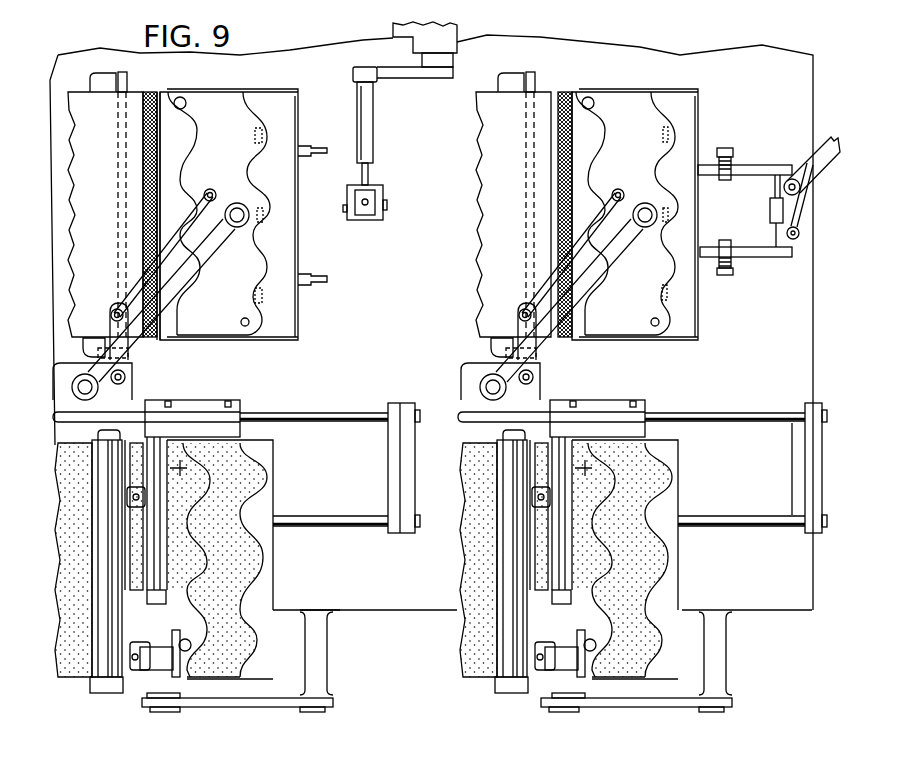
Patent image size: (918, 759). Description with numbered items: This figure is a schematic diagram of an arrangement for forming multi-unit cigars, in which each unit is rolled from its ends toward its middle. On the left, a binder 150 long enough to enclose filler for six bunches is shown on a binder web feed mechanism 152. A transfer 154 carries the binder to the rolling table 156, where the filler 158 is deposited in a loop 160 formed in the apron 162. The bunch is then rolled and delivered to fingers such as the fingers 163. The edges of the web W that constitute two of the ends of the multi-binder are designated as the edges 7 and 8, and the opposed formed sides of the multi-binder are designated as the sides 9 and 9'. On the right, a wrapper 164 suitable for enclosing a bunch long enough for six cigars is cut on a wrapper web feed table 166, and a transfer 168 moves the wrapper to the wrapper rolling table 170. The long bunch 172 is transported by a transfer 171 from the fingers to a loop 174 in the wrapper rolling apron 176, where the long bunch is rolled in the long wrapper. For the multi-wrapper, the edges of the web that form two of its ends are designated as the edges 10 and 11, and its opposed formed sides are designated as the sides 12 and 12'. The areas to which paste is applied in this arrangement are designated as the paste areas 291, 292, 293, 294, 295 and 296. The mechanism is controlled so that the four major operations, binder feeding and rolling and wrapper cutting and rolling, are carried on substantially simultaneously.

The apron 162 is at (73, 92).
The loop 160 is at (147, 97).
The filler 158 is at (154, 141).
The paste area 291 is at (253, 134).
The paste area 292 is at (270, 206).
The paste area 293 is at (253, 292).
The transfer 154 is at (133, 348).
The rolling table 156 is at (271, 356).
The fingers 163 is at (308, 281).
The transfer 171 is at (389, 159).
The web edge 7 is at (233, 443).
The formed side 9 is at (217, 558).
The formed side 9' is at (220, 525).
The binder 150 is at (247, 650).
The web edge 8 is at (197, 679).
The binder web feed mechanism 152 is at (140, 720).
The web W is at (80, 675).
The loop 174 is at (631, 202).
The long bunch 172 is at (585, 214).
The wrapper rolling apron 176 is at (503, 214).
The paste area 294 is at (640, 125).
The paste area 295 is at (680, 196).
The paste area 296 is at (640, 302).
The transfer 168 is at (559, 294).
The wrapper rolling table 170 is at (719, 288).
The web edge 10 is at (642, 496).
The formed side 12 is at (622, 558).
The formed side 12' is at (625, 525).
The wrapper 164 is at (592, 564).
The web edge 11 is at (635, 687).
The wrapper web feed table 166 is at (752, 665).